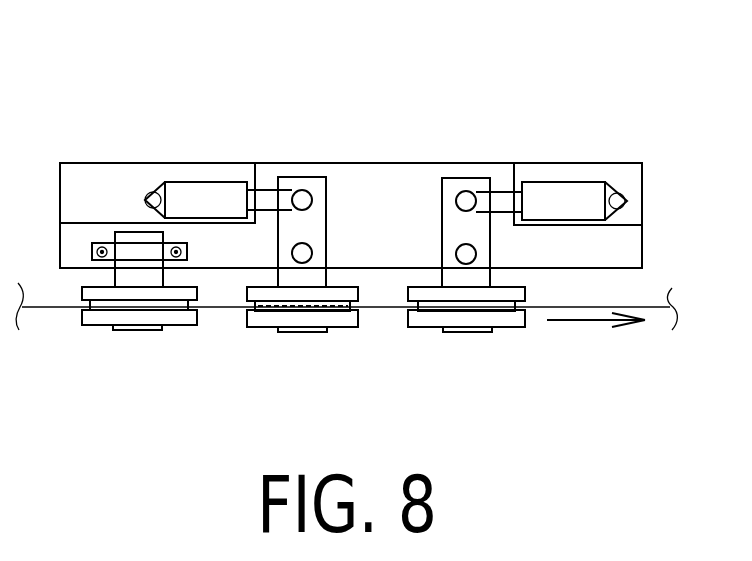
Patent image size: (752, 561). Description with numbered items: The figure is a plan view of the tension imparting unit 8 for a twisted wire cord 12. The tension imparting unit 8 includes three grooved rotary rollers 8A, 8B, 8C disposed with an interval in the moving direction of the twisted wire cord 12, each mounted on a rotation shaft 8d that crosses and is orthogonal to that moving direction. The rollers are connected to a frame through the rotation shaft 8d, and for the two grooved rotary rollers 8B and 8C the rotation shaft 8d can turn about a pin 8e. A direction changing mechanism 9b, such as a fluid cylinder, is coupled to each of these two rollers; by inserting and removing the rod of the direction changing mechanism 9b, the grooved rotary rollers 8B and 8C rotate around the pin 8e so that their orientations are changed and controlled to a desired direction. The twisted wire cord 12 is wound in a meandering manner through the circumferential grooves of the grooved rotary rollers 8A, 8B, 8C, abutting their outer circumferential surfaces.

The tension imparting unit 8 is at (160, 128).
The grooved rotary roller 8A is at (128, 318).
The grooved rotary roller 8B is at (300, 318).
The grooved rotary roller 8C is at (463, 320).
The rotation shaft 8d is at (135, 245).
The pin 8e is at (293, 252).
The direction changing mechanism 9b is at (203, 192).
The twisted wire cord 12 is at (222, 308).